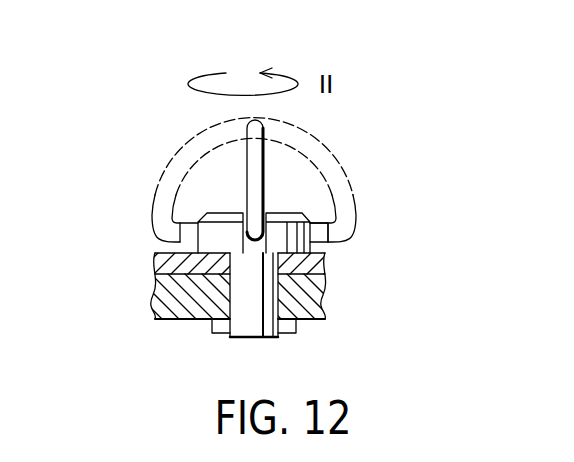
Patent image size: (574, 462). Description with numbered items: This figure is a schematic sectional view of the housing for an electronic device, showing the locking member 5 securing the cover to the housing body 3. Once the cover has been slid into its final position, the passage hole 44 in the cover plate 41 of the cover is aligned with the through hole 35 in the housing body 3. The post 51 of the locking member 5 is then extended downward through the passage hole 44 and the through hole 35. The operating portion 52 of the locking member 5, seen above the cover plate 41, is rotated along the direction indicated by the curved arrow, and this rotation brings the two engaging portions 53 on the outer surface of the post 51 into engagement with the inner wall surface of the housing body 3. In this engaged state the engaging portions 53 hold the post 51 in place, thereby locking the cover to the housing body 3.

The locking member 5 is at (366, 190).
The operating portion 52 is at (216, 232).
The cover plate 41 is at (320, 256).
The passage hole 44 is at (318, 262).
The housing body 3 is at (257, 298).
The through hole 35 is at (318, 300).
The post 51 is at (253, 310).
The engaging portions 53 is at (219, 326).